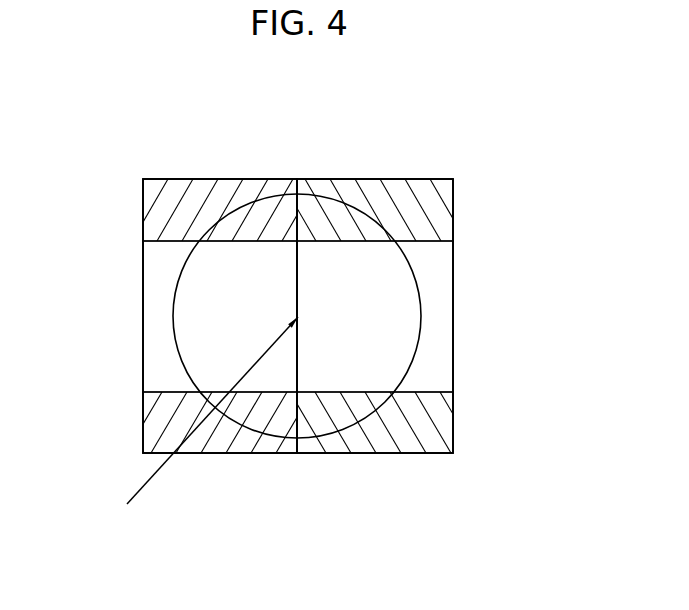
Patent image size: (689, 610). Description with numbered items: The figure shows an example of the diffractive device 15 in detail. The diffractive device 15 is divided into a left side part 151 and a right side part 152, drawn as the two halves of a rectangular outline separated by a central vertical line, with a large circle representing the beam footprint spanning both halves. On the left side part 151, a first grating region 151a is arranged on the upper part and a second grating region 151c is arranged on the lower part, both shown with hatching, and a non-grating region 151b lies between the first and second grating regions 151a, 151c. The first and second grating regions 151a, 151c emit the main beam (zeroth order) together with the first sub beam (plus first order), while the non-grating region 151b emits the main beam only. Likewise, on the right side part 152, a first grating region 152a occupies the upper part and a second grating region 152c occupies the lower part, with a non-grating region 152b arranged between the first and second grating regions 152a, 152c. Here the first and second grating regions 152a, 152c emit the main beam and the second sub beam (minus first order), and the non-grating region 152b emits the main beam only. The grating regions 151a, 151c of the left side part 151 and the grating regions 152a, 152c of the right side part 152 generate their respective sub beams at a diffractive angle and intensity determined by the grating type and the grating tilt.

The diffractive device 15 is at (455, 155).
The left side part 151 is at (202, 180).
The right side part 152 is at (404, 180).
The first grating region 151a is at (145, 207).
The non-grating region 151b is at (145, 318).
The second grating region 151c is at (145, 418).
The first grating region 152a is at (450, 207).
The non-grating region 152b is at (450, 318).
The second grating region 152c is at (450, 418).